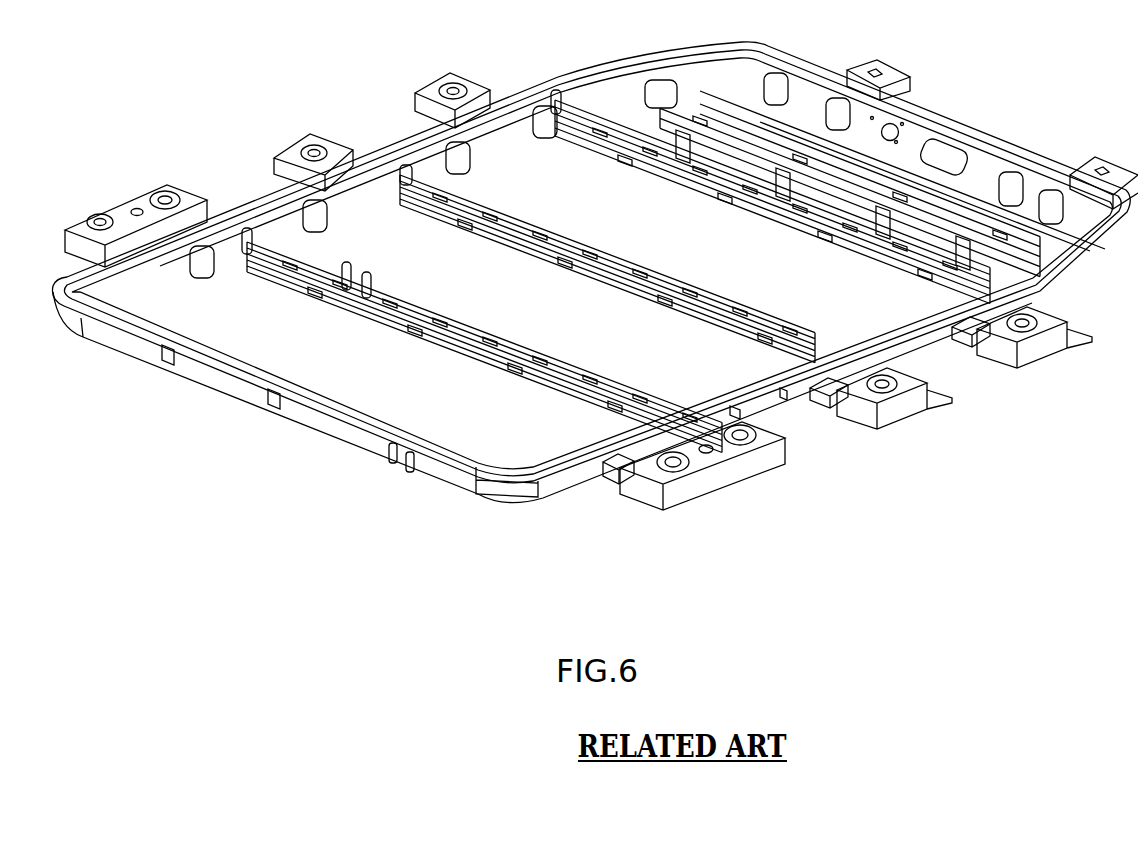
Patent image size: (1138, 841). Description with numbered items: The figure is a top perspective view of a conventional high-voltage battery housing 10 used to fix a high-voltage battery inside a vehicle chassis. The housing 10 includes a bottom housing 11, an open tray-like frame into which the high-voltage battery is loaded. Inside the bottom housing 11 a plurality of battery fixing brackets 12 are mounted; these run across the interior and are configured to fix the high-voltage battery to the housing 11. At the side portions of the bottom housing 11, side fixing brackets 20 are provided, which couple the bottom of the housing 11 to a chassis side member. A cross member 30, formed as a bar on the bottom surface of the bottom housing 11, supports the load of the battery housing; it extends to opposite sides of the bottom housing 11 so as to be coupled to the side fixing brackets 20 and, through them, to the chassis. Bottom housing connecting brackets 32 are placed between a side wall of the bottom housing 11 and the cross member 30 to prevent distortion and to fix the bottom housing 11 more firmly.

The battery housing 10 is at (595, 306).
The bottom housing 11 is at (987, 147).
The battery fixing brackets 12 is at (412, 333).
The side fixing brackets 20 is at (898, 403).
The cross member 30 is at (630, 483).
The bottom housing connecting brackets 32 is at (607, 480).